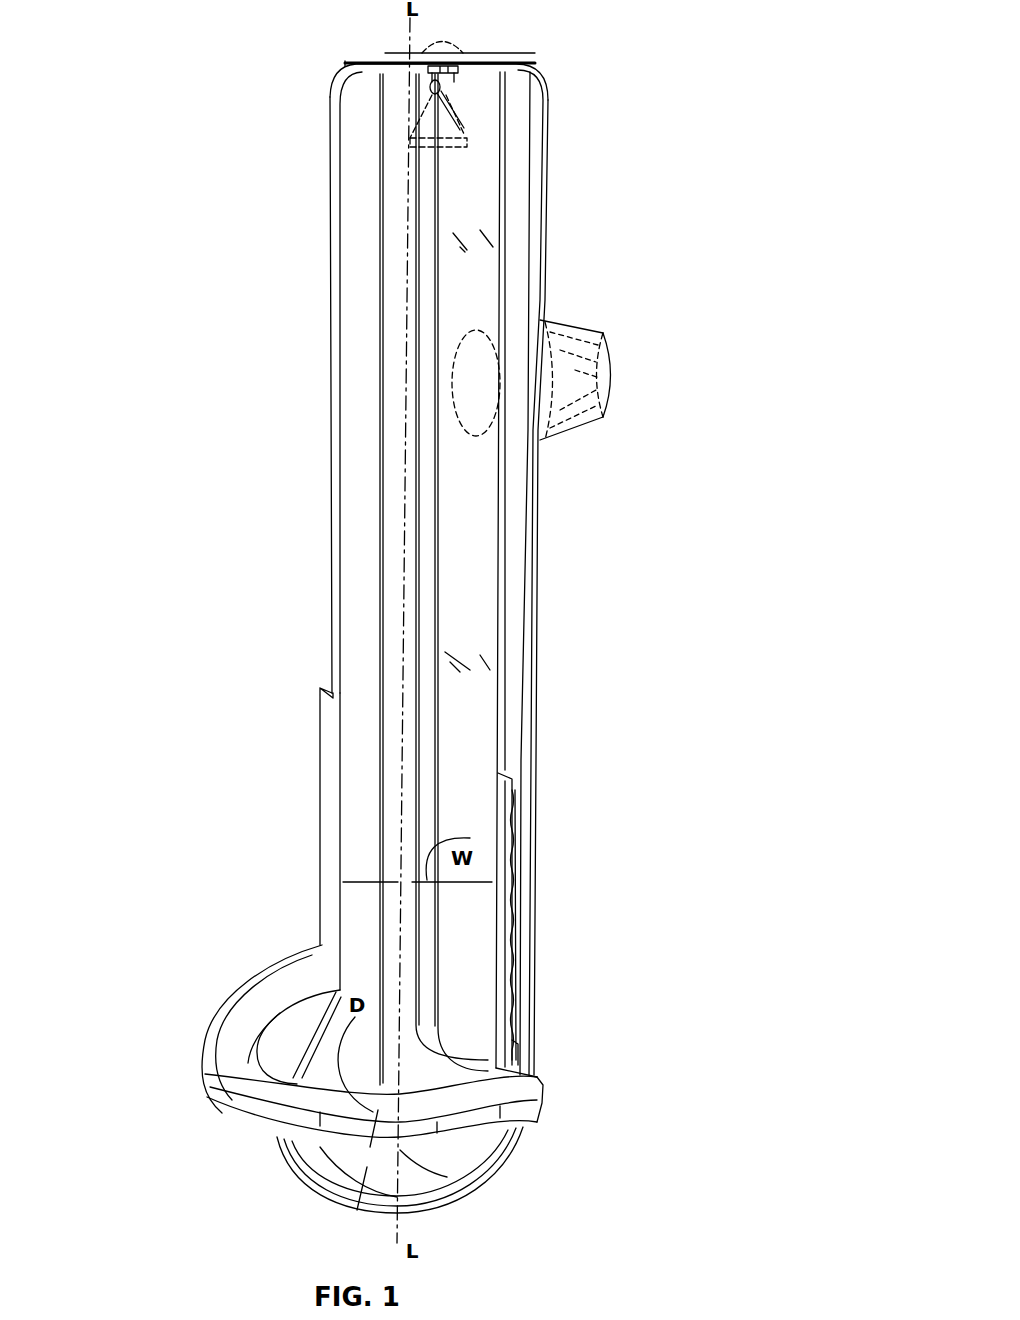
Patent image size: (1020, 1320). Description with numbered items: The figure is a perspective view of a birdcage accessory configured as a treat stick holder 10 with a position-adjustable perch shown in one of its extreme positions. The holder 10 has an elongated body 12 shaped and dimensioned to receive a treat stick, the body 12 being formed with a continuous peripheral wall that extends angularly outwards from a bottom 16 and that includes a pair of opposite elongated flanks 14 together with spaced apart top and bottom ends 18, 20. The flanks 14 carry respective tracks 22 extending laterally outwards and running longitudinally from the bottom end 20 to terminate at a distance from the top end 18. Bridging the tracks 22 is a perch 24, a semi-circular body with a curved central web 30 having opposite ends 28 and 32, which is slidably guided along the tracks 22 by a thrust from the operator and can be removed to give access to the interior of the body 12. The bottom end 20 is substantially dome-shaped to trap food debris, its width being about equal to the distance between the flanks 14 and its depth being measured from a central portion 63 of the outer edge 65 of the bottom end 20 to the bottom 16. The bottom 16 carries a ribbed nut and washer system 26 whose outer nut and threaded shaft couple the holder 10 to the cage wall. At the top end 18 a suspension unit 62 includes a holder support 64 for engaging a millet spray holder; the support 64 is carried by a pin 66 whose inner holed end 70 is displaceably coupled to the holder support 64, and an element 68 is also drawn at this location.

The treat stick holder 10 is at (303, 400).
The elongated body 12 is at (540, 125).
The elongated flanks 14 is at (333, 497).
The bottom 16 is at (477, 528).
The top end 18 is at (345, 60).
The bottom end 20 is at (437, 1157).
The tracks 22 is at (333, 720).
The perch 24 is at (207, 1099).
The ribbed nut and washer system 26 is at (600, 358).
The end of curved web 28 is at (287, 992).
The curved central web 30 is at (243, 1077).
The end of curved web 32 is at (527, 1085).
The suspension unit 62 is at (398, 141).
The central portion of outer edge 63 is at (368, 1190).
The holder support 64 is at (515, 160).
The outer edge 65 is at (315, 1190).
The pin 66 is at (427, 81).
The button 68 is at (460, 35).
The inner holed end 70 is at (432, 97).